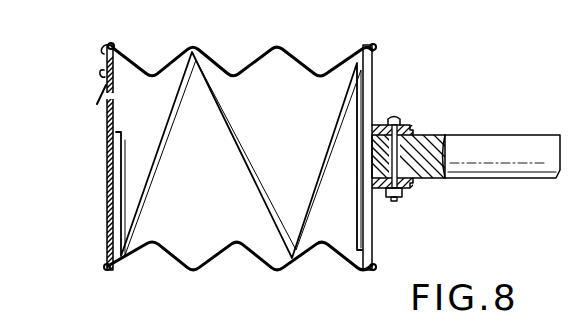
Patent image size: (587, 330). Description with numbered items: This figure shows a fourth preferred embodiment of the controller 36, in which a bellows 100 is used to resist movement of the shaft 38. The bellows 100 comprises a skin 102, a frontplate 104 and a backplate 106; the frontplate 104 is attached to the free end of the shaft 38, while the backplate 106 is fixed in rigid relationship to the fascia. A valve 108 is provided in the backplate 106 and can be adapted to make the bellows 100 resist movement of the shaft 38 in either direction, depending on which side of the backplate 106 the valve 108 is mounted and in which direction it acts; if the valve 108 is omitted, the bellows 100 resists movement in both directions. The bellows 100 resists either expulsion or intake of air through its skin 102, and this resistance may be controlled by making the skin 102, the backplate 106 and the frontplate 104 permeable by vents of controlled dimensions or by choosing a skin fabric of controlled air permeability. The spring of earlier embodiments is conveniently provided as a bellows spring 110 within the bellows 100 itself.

The controller 36 is at (455, 250).
The shaft 38 is at (522, 143).
The bellows 100 is at (213, 223).
The skin 102 is at (253, 34).
The frontplate 104 is at (372, 72).
The backplate 106 is at (107, 173).
The valve 108 is at (96, 91).
The bellows spring 110 is at (239, 152).